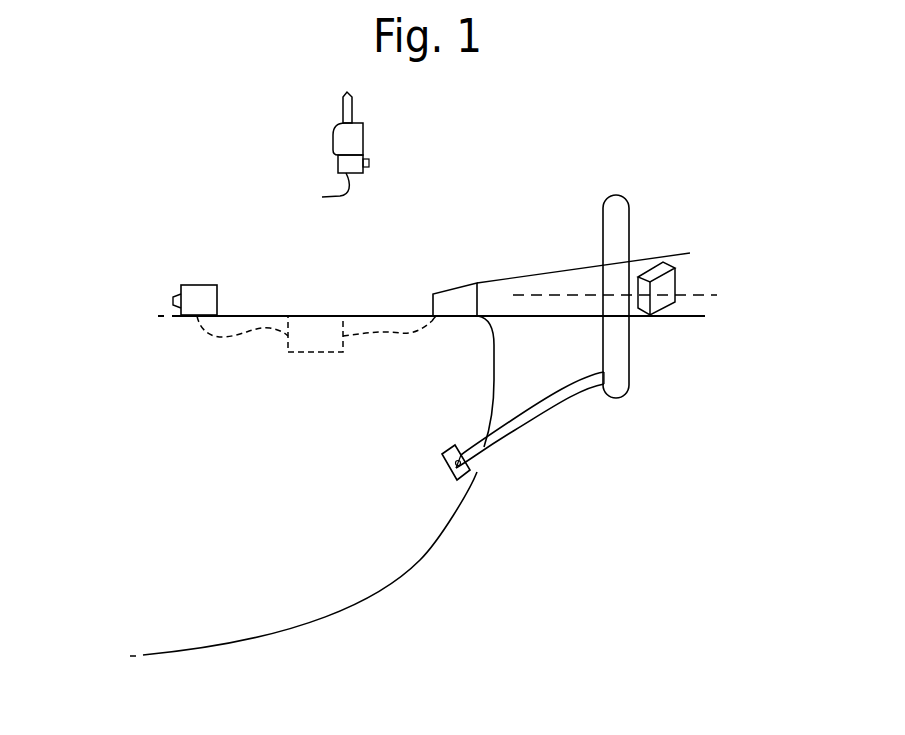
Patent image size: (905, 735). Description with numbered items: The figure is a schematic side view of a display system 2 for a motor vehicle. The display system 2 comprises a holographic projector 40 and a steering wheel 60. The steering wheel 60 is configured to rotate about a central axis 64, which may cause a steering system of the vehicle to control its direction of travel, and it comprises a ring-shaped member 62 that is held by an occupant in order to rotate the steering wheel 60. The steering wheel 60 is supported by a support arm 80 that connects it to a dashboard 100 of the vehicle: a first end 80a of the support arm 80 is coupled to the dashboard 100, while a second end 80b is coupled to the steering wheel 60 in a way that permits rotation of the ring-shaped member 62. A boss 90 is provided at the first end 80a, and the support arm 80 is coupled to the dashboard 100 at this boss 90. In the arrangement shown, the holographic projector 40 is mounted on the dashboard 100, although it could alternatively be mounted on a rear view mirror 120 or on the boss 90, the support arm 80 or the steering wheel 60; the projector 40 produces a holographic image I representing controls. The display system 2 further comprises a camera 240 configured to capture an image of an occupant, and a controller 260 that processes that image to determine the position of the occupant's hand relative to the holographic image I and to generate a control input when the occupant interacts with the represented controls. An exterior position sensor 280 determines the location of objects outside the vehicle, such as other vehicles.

The display system 2 is at (178, 183).
The rear view mirror 120 is at (364, 134).
The camera 240 is at (312, 192).
The exterior position sensor 280 is at (193, 286).
The controller 260 is at (312, 318).
The holographic projector 40 is at (448, 292).
The steering wheel 60 is at (590, 214).
The ring-shaped member 62 is at (617, 193).
The holographic image I is at (665, 262).
The central axis 64 is at (701, 292).
The support arm 80 is at (527, 428).
The first end 80a is at (462, 452).
The second end 80b is at (592, 396).
The boss 90 is at (462, 484).
The dashboard 100 is at (420, 563).